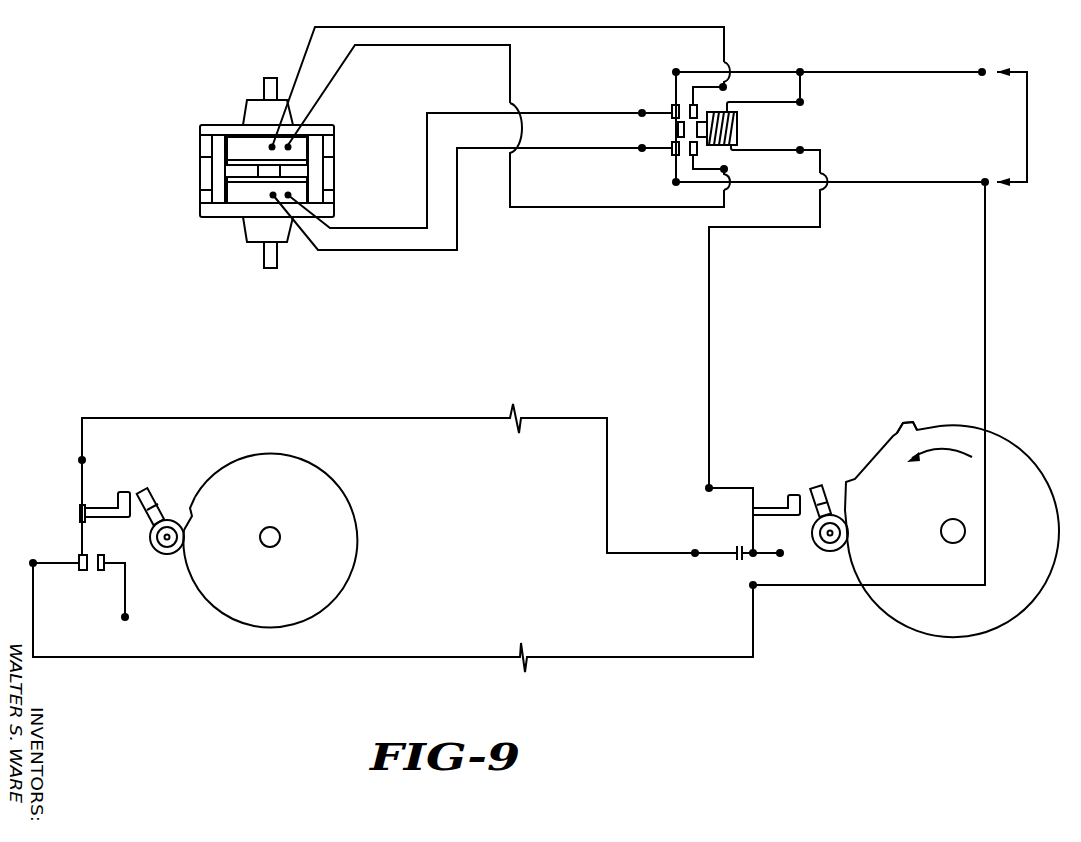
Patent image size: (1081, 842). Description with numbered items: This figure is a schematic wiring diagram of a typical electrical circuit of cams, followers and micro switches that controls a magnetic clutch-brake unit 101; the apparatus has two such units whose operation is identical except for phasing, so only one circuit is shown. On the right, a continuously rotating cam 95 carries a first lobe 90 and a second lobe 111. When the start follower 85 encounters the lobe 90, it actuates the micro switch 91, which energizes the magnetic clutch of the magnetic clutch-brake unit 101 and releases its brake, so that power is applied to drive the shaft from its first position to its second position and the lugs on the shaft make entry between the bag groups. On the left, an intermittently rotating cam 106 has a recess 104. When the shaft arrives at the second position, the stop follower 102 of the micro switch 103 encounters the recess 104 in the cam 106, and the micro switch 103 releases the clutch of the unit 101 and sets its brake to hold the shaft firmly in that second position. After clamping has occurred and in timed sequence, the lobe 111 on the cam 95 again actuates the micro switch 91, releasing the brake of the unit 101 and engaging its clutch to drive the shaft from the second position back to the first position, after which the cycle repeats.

The start follower 85 is at (830, 551).
The lobe 90 is at (846, 496).
The micro switch 91 is at (793, 495).
The cam 95 is at (1013, 455).
The magnetic clutch-brake unit 101 is at (195, 150).
The stop follower 102 is at (166, 554).
The micro switch 103 is at (126, 490).
The recess 104 is at (193, 515).
The cam 106 is at (350, 512).
The lobe 111 is at (902, 428).